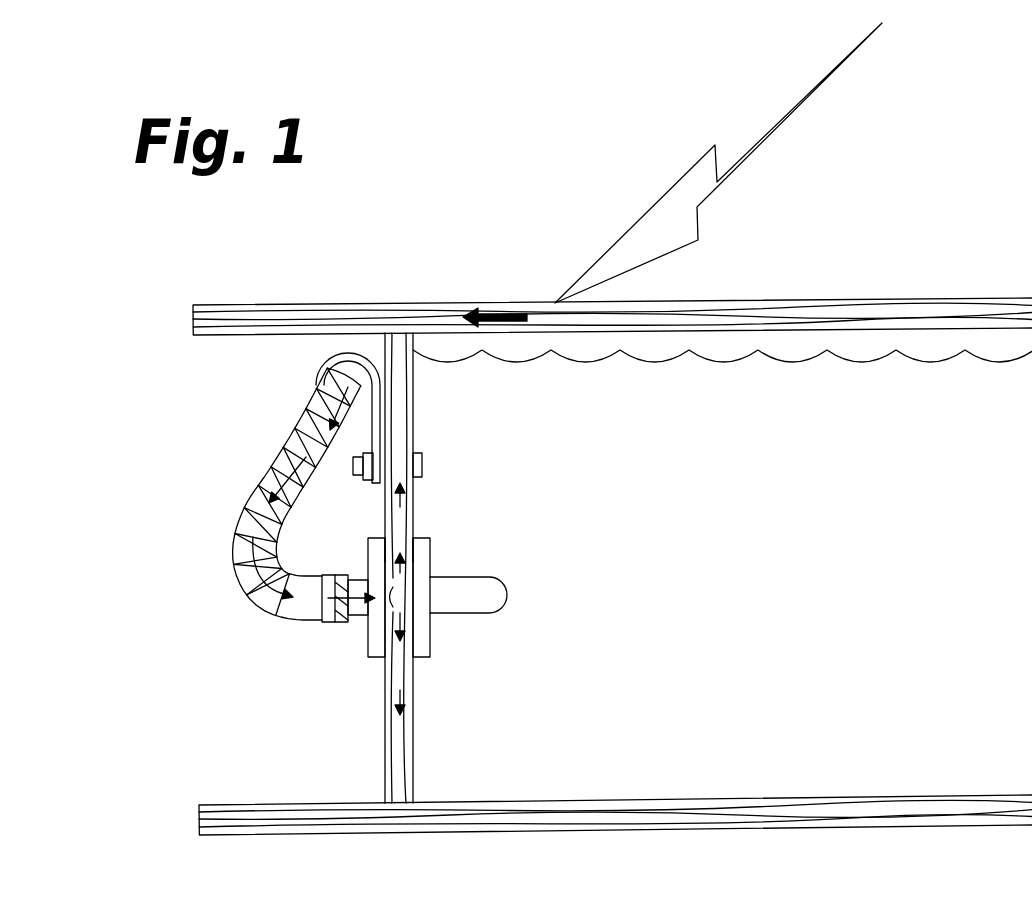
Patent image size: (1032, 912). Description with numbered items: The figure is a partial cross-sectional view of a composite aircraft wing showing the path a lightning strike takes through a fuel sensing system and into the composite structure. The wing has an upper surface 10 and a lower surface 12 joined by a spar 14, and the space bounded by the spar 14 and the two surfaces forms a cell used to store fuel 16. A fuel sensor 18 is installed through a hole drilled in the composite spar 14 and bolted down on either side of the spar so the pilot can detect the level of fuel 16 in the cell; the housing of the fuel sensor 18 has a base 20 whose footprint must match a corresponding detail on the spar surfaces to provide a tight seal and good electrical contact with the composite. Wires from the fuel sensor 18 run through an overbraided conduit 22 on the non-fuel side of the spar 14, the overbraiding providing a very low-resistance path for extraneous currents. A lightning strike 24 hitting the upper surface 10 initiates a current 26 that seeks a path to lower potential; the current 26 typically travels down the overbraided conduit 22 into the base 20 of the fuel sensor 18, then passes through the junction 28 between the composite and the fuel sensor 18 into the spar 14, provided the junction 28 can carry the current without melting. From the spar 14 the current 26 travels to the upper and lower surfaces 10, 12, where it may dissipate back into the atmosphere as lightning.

The upper surface 10 is at (698, 303).
The lower surface 12 is at (705, 829).
The spar 14 is at (388, 715).
The fuel 16 is at (788, 528).
The fuel sensor 18 is at (500, 597).
The base 20 is at (372, 641).
The overbraided conduit 22 is at (243, 586).
The lightning strike 24 is at (793, 113).
The current 26 is at (504, 310).
The junction 28 is at (386, 538).